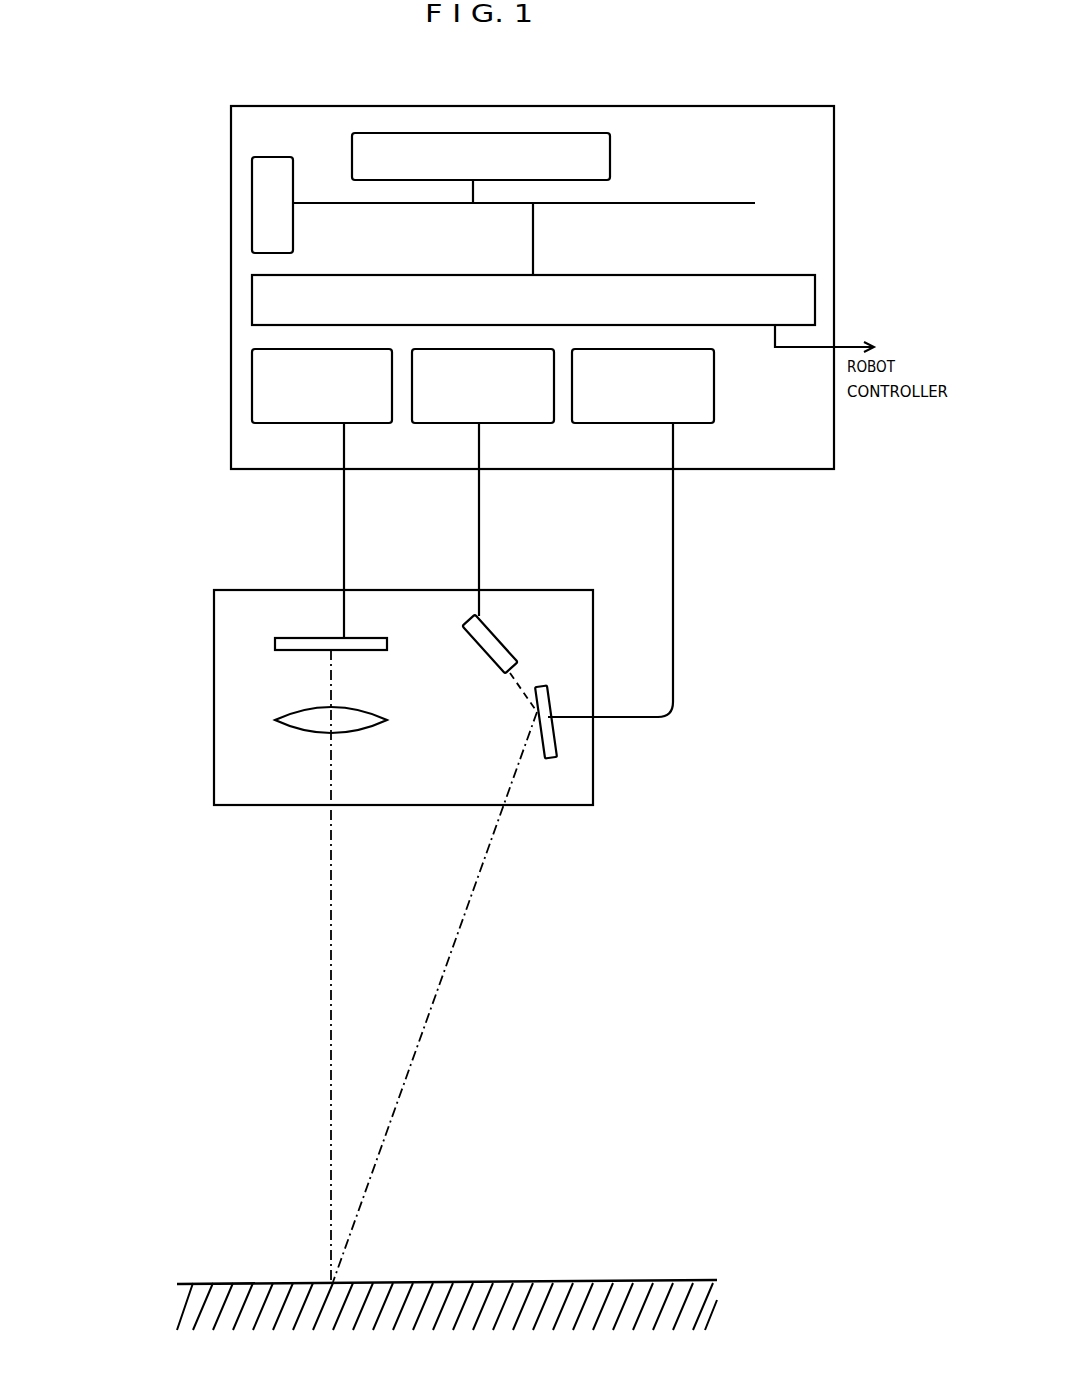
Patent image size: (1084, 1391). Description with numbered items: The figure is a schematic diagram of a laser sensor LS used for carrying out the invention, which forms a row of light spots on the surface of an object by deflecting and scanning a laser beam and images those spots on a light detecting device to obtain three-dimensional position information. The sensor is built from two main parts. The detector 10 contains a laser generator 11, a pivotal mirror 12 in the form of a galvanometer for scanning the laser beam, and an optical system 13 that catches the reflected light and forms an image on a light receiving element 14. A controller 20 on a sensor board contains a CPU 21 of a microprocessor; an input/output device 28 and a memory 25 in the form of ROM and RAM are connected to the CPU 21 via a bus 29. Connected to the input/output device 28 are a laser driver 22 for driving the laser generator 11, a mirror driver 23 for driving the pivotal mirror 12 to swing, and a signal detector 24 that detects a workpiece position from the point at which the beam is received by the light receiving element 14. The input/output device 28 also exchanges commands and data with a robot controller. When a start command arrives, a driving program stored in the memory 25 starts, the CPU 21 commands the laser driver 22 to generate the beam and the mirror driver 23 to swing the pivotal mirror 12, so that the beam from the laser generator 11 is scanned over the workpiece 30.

The laser sensor LS is at (192, 425).
The detector 10 is at (565, 806).
The laser generator 11 is at (503, 637).
The pivotal mirror 12 is at (557, 738).
The optical system 13 is at (303, 731).
The light receiving element 14 is at (306, 638).
The controller 20 is at (733, 105).
The CPU 21 is at (273, 157).
The laser driver 22 is at (465, 424).
The mirror driver 23 is at (644, 424).
The signal detector 24 is at (305, 424).
The memory 25 is at (611, 157).
The input/output device 28 is at (374, 275).
The bus 29 is at (690, 203).
The workpiece 30 is at (520, 1282).